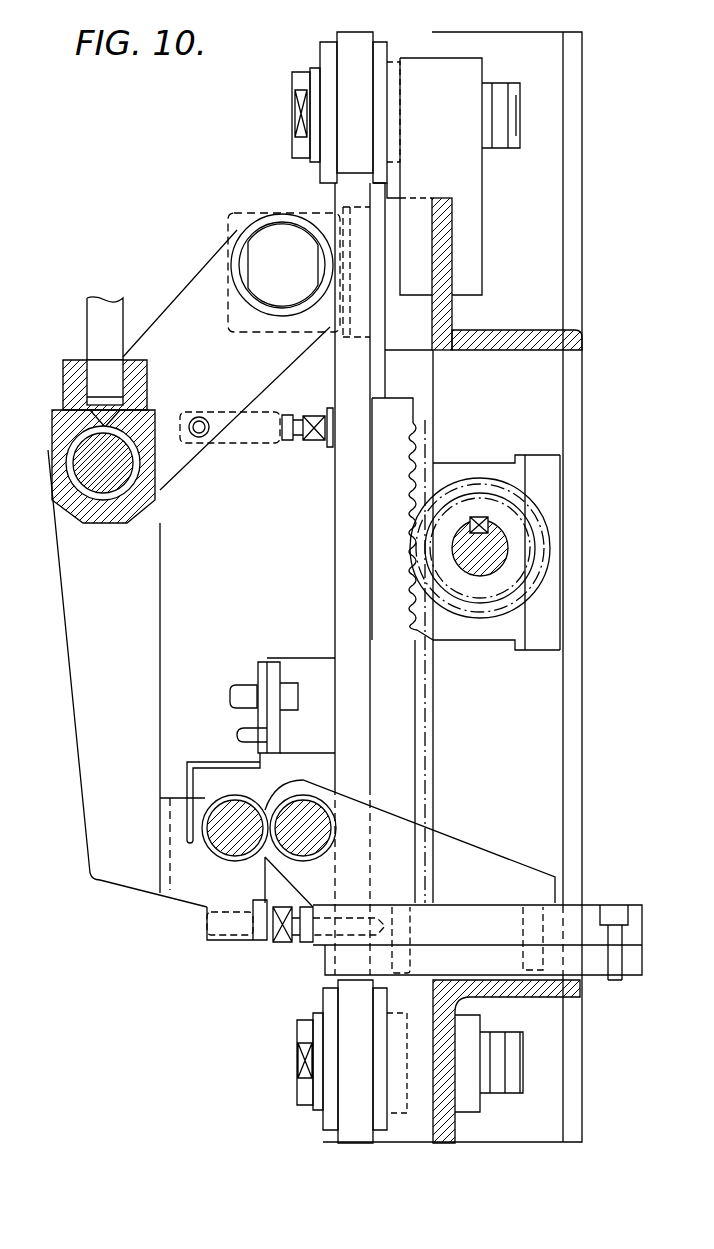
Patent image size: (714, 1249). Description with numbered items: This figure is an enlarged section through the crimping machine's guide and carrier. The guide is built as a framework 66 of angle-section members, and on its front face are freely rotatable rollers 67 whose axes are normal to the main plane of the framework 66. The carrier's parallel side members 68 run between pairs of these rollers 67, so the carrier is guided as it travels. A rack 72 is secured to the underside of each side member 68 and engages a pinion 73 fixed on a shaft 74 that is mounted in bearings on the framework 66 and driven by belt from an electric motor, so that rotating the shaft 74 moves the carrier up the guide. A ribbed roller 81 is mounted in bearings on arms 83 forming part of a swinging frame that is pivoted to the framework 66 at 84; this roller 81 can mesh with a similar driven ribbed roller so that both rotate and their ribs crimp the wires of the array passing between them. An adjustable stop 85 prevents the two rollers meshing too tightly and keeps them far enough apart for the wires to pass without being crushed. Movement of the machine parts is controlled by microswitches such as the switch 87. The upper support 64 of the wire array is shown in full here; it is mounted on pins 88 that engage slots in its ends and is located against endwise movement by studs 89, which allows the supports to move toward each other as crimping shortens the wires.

The upper support 64 is at (217, 727).
The framework 66 is at (552, 237).
The rollers 67 is at (342, 88).
The side members 68 is at (342, 542).
The racks 72 is at (403, 417).
The pinions 73 is at (483, 602).
The shaft 74 is at (505, 543).
The roller 81 is at (217, 853).
The arms 83 is at (147, 578).
The pivot 84 is at (253, 268).
The adjustable stop 85 is at (277, 943).
The microswitches 87 is at (237, 430).
The pins 88 is at (245, 690).
The studs 89 is at (283, 750).